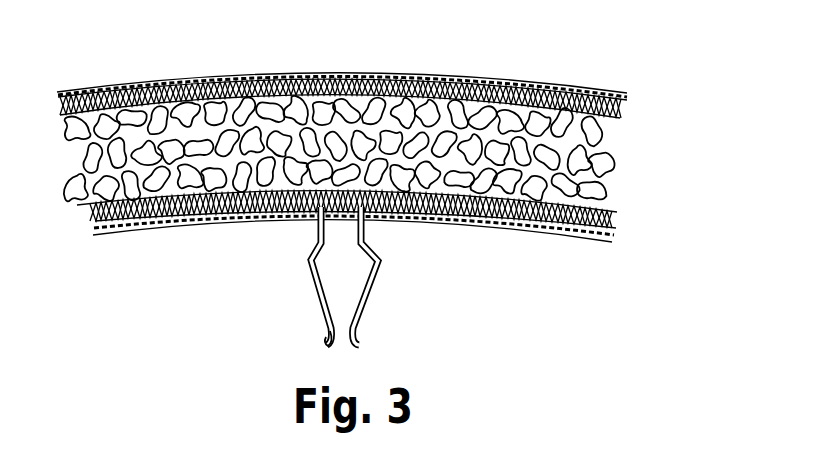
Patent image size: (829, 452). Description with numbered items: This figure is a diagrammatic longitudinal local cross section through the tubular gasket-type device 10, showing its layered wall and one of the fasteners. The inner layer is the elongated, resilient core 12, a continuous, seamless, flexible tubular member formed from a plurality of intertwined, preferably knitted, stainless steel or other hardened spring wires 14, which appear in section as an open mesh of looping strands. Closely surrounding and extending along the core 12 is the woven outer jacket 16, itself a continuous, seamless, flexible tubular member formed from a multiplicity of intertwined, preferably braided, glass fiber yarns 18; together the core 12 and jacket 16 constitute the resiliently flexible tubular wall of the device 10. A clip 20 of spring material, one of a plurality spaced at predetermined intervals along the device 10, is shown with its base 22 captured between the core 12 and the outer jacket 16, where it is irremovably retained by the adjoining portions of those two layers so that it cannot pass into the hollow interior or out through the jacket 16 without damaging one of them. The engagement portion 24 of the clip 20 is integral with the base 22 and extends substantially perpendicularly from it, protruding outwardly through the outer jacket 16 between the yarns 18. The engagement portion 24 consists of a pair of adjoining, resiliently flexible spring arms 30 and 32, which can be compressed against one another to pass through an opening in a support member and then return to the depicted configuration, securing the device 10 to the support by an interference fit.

The tubular gasket-type device 10 is at (377, 162).
The core 12 is at (626, 148).
The spring wires 14 is at (481, 108).
The woven outer jacket 16 is at (552, 249).
The fibrous yarns 18 is at (583, 236).
The clip 20 is at (349, 295).
The base 22 is at (277, 224).
The engagement portion 24 is at (277, 295).
The spring arm 30 is at (326, 333).
The spring arm 32 is at (365, 311).